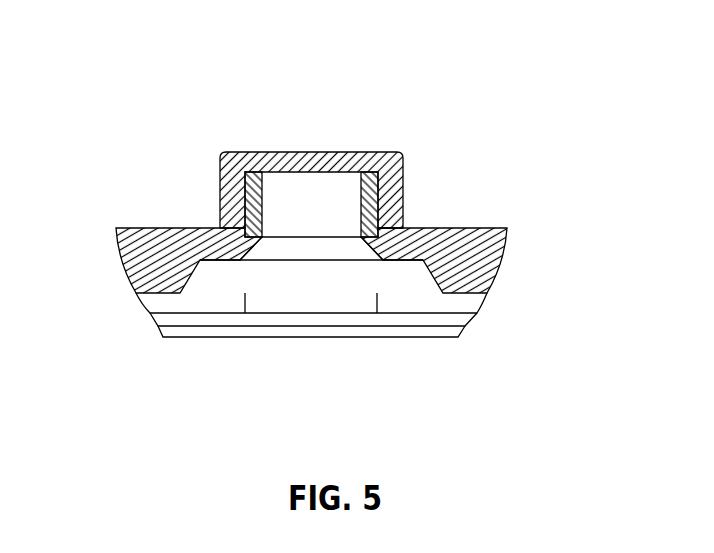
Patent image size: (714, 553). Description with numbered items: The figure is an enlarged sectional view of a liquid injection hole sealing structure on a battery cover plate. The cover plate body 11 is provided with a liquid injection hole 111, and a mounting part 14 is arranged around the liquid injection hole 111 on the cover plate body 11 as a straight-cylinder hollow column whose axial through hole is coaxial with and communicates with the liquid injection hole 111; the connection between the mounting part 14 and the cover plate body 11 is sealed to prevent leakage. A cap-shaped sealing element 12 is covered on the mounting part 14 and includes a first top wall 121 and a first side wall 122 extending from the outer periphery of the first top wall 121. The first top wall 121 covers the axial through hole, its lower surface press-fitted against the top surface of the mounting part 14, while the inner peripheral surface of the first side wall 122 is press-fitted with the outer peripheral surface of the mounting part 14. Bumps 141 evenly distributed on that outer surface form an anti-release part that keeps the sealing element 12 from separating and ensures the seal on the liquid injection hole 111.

The cover plate body 11 is at (148, 231).
The liquid injection hole 111 is at (318, 250).
The sealing element 12 is at (391, 128).
The first top wall 121 is at (262, 162).
The first side wall 122 is at (393, 187).
The mounting part 14 is at (369, 240).
The bumps 141 is at (403, 228).